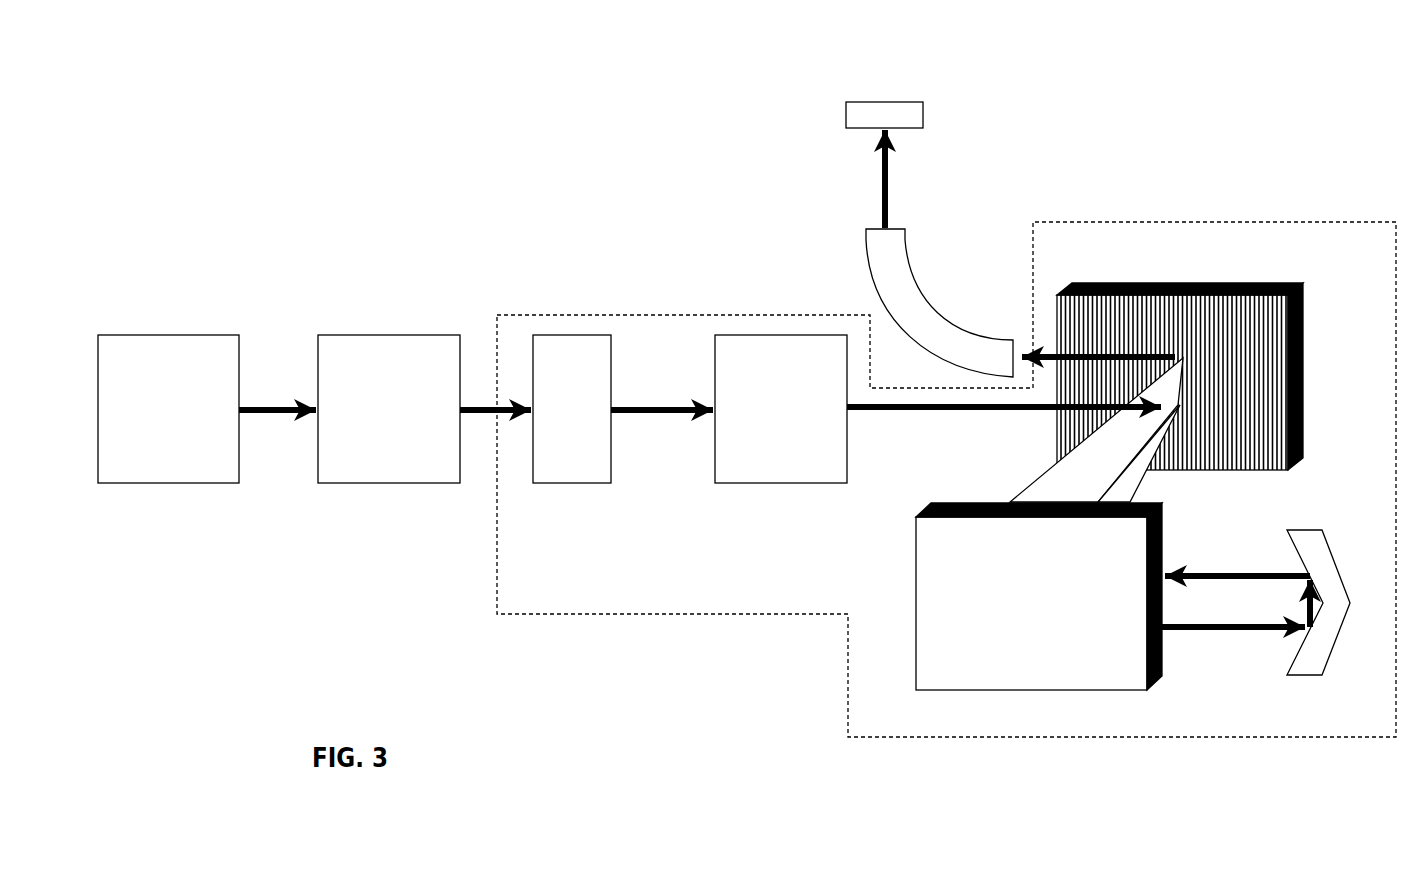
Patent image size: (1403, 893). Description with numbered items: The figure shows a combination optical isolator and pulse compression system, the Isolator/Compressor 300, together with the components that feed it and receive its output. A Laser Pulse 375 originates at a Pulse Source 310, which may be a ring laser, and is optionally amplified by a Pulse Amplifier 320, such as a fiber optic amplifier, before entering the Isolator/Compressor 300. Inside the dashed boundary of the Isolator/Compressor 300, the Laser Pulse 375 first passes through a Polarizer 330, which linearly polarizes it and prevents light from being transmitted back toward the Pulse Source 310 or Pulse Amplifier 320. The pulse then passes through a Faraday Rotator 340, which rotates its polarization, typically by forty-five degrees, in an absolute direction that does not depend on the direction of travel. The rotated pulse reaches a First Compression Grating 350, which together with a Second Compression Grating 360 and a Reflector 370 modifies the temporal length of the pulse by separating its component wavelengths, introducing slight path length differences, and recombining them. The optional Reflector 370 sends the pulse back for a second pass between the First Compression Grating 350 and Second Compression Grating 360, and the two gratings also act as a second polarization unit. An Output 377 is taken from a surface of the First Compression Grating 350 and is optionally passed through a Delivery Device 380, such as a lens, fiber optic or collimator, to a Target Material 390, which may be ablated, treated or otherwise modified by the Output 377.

The Isolator/Compressor 300 is at (712, 614).
The Pulse Source 310 is at (198, 483).
The Pulse Amplifier 320 is at (388, 335).
The Polarizer 330 is at (572, 483).
The Faraday Rotator 340 is at (782, 335).
The First Compression Grating 350 is at (1303, 287).
The Second Compression Grating 360 is at (1028, 690).
The Reflector 370 is at (1305, 675).
The Laser Pulse 375 is at (265, 405).
The Output 377 is at (1042, 350).
The Delivery Device 380 is at (912, 264).
The Target Material 390 is at (845, 117).